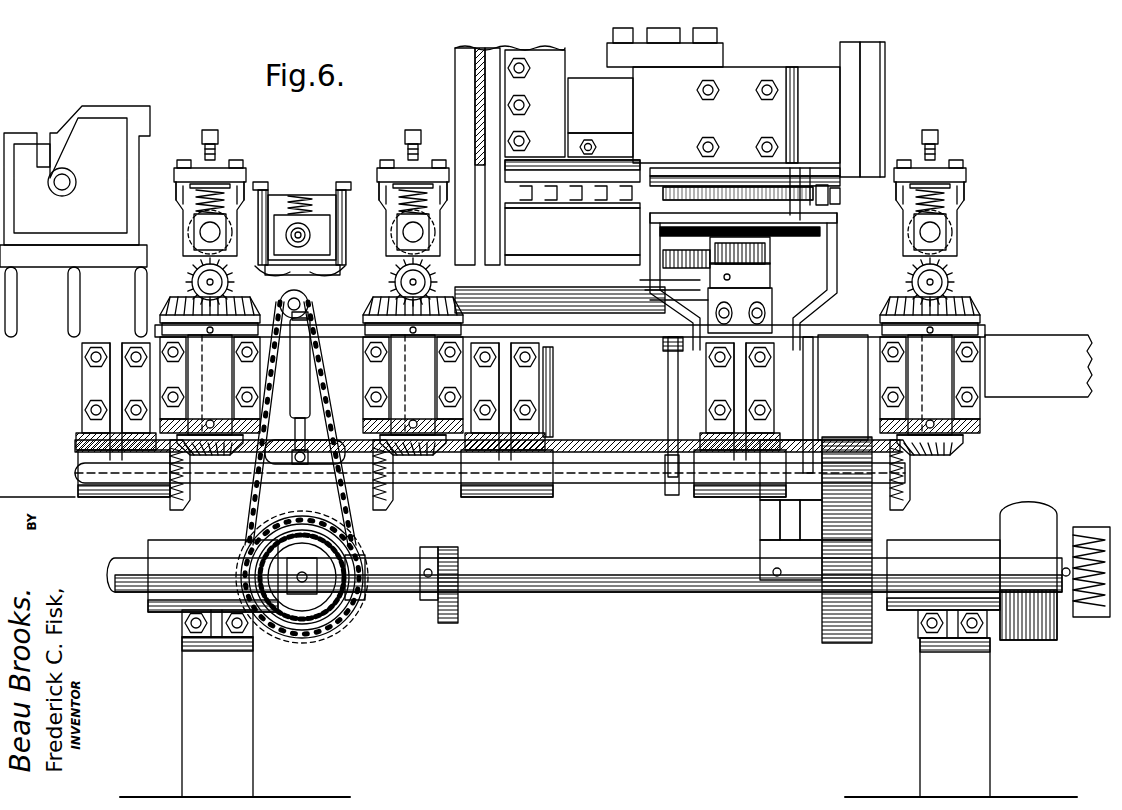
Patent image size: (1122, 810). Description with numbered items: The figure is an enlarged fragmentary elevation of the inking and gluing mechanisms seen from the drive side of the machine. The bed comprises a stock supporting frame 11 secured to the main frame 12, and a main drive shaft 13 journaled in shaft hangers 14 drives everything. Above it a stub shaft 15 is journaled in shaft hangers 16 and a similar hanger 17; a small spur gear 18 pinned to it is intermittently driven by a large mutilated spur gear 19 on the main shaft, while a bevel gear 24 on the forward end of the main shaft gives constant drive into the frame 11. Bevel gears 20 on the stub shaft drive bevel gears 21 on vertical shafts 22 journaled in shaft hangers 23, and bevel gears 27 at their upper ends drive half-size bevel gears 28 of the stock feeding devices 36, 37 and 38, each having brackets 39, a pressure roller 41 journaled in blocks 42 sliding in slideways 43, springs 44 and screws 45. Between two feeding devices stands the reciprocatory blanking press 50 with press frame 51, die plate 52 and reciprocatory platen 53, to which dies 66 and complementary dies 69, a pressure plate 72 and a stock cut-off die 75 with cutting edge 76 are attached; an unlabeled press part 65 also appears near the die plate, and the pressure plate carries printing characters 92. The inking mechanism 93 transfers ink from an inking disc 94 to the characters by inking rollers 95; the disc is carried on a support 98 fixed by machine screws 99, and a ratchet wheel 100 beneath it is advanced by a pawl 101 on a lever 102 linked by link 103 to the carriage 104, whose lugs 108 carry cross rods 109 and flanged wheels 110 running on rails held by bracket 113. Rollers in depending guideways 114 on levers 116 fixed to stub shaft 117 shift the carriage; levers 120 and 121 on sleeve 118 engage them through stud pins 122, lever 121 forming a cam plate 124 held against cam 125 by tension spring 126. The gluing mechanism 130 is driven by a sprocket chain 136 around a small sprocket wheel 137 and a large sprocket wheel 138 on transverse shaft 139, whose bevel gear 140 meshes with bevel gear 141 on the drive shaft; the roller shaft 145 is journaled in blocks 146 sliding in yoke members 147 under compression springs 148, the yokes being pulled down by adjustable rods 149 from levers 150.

The stock supporting frame 11 is at (1038, 366).
The main frame 12 is at (579, 392).
The main drive shaft 13 is at (607, 580).
The shaft hangers 14 is at (574, 589).
The stub shaft 15 is at (605, 485).
The shaft hangers 16 is at (97, 480).
The shaft hanger 17 is at (726, 482).
The small spur gear 18 is at (848, 510).
The large mutilated spur gear 19 is at (850, 537).
The bevel gears 20 is at (181, 478).
The bevel gears 21 is at (187, 446).
The vertical shafts 22 is at (440, 456).
The shaft hangers 23 is at (200, 372).
The bevel gear 24 is at (1093, 528).
The bevel gears 27 is at (160, 316).
The half-size bevel gears 28 is at (182, 283).
The feeding device 36 is at (934, 124).
The feeding device 37 is at (416, 124).
The feeding device 38 is at (214, 124).
The brackets 39 is at (186, 214).
The pressure roller 41 is at (198, 214).
The blocks 42 is at (200, 228).
The slideways 43 is at (196, 196).
The springs 44 is at (190, 180).
The screws 45 is at (203, 147).
The reciprocatory blanking press 50 is at (898, 61).
The press frame 51 is at (886, 82).
The die plate 52 is at (626, 256).
The reciprocatory platen 53 is at (626, 205).
The bar 65 is at (590, 256).
The dies 66 is at (600, 205).
The complementary dies 69 is at (555, 205).
The pressure plate 72 is at (530, 205).
The transverse stock cut-off die 75 is at (505, 193).
The cutting edge 76 is at (505, 205).
The printing or embossing characters 92 is at (688, 190).
The inking mechanism 93 is at (745, 144).
The inking disc 94 is at (792, 214).
The inking rollers 95 is at (802, 220).
The support 98 is at (773, 298).
The machine screws 99 is at (715, 312).
The ratchet wheel 100 is at (770, 252).
The spring pressed pawl 101 is at (702, 291).
The lever 102 is at (708, 301).
The link 103 is at (698, 281).
The carriage 104 is at (812, 205).
The upstanding lugs 108 is at (822, 210).
The cross rods 109 is at (832, 203).
The flanged wheels 110 is at (840, 191).
The supporting bracket 113 is at (736, 115).
The depending guideways 114 is at (822, 244).
The levers 116 is at (816, 320).
The stub shaft 117 is at (818, 355).
The rotatable sleeve 118 is at (672, 488).
The lever 120 is at (668, 395).
The lever 121 is at (813, 396).
The stud pin 122 is at (663, 352).
The cam plate 124 is at (790, 572).
The cam 125 is at (764, 536).
The tension spring 126 is at (768, 553).
The gluing mechanism 130 is at (312, 187).
The sprocket chain 136 is at (345, 499).
The small sprocket wheel 137 is at (318, 356).
The large sprocket wheel 138 is at (302, 625).
The transverse shaft 139 is at (322, 610).
The bevel gear 140 is at (358, 600).
The bevel gear 141 is at (353, 610).
The shaft 145 is at (298, 224).
The blocks 146 is at (325, 214).
The yoke members 147 is at (279, 214).
The compression springs 148 is at (276, 196).
The adjustable rods 149 is at (304, 375).
The levers 150 is at (352, 452).